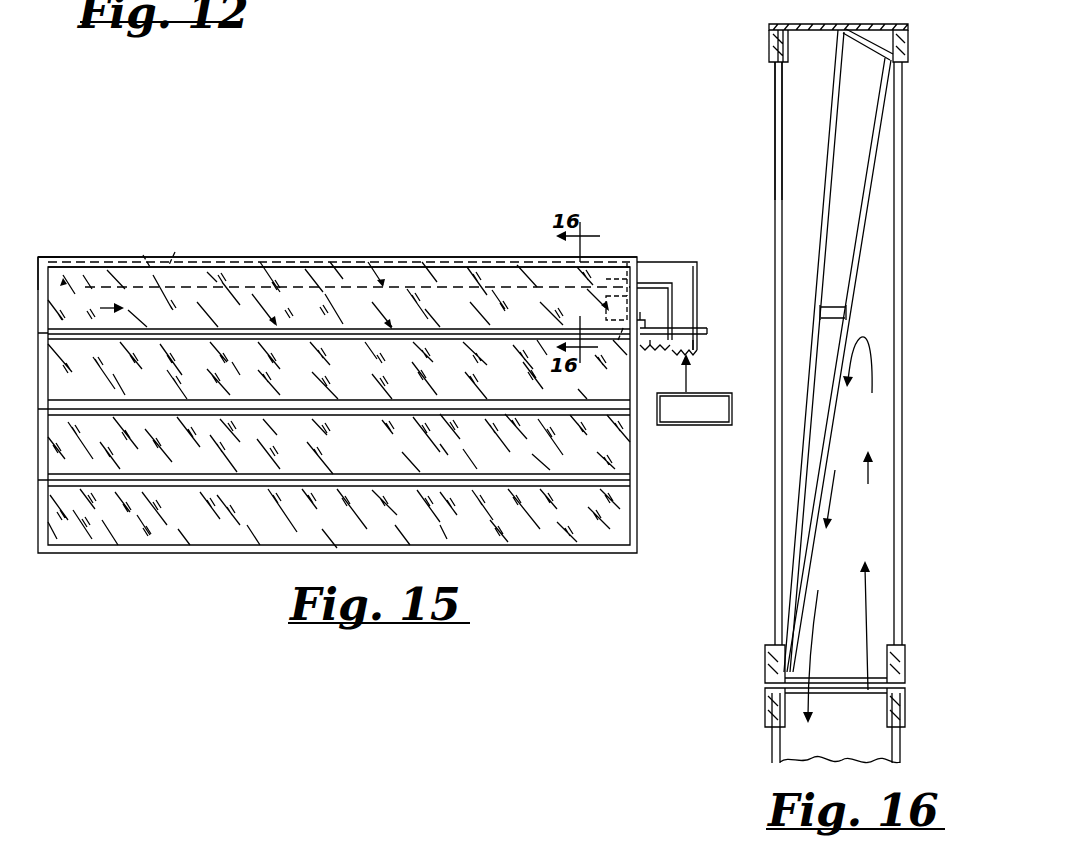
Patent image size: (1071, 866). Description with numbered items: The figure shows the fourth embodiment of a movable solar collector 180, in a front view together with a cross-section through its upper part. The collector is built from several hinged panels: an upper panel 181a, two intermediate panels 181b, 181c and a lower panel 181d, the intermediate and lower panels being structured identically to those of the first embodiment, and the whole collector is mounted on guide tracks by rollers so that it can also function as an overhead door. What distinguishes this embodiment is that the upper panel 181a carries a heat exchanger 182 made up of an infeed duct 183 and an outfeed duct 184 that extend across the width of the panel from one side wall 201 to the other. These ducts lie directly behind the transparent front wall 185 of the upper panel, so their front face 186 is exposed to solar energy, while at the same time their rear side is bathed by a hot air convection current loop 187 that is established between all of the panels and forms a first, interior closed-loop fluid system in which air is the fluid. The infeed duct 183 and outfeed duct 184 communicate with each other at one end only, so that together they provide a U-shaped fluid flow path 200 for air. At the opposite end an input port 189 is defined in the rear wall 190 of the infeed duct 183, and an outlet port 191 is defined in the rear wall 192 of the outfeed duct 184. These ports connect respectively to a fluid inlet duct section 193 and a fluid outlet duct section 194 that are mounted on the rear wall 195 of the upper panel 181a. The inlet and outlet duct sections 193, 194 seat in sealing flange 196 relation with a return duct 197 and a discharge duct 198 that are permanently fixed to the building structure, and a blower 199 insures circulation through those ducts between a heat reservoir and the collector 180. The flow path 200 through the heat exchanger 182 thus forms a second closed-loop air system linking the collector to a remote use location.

In FIG. 15, the solar collector 180 is at (392, 172).
In FIG. 16, the solar collector 180 is at (694, 727).
In FIG. 15, the upper panel 181a is at (236, 292).
In FIG. 16, the upper panel 181a is at (775, 150).
In FIG. 15, the intermediate panel 181b is at (285, 352).
In FIG. 16, the intermediate panel 181b is at (766, 750).
In FIG. 15, the intermediate panel 181c is at (212, 460).
In FIG. 15, the lower panel 181d is at (240, 535).
In FIG. 15, the heat exchanger 182 is at (387, 262).
In FIG. 16, the heat exchanger 182 is at (862, 293).
In FIG. 15, the infeed duct 183 is at (143, 255).
In FIG. 16, the infeed duct 183 is at (868, 172).
In FIG. 15, the outfeed duct 184 is at (175, 252).
In FIG. 16, the outfeed duct 184 is at (827, 401).
In FIG. 15, the transparent front wall 185 is at (339, 407).
In FIG. 16, the transparent front wall 185 is at (774, 200).
In FIG. 16, the front face 186 is at (822, 165).
In FIG. 16, the hot air convection current loop 187 is at (873, 479).
In FIG. 15, the input port 189 is at (618, 262).
In FIG. 16, the rear wall 190 is at (881, 104).
In FIG. 15, the outlet port 191 is at (618, 340).
In FIG. 16, the rear wall 192 is at (848, 336).
In FIG. 15, the fluid inlet duct section 193 is at (658, 270).
In FIG. 15, the fluid outlet duct section 194 is at (655, 303).
In FIG. 16, the rear wall 195 is at (895, 286).
In FIG. 15, the sealing flange 196 is at (707, 331).
In FIG. 15, the return duct 197 is at (705, 350).
In FIG. 15, the discharge duct 198 is at (666, 346).
In FIG. 15, the blower 199 is at (692, 427).
In FIG. 15, the fluid flow path 200 is at (78, 290).
In FIG. 15, the side wall 201 is at (37, 266).